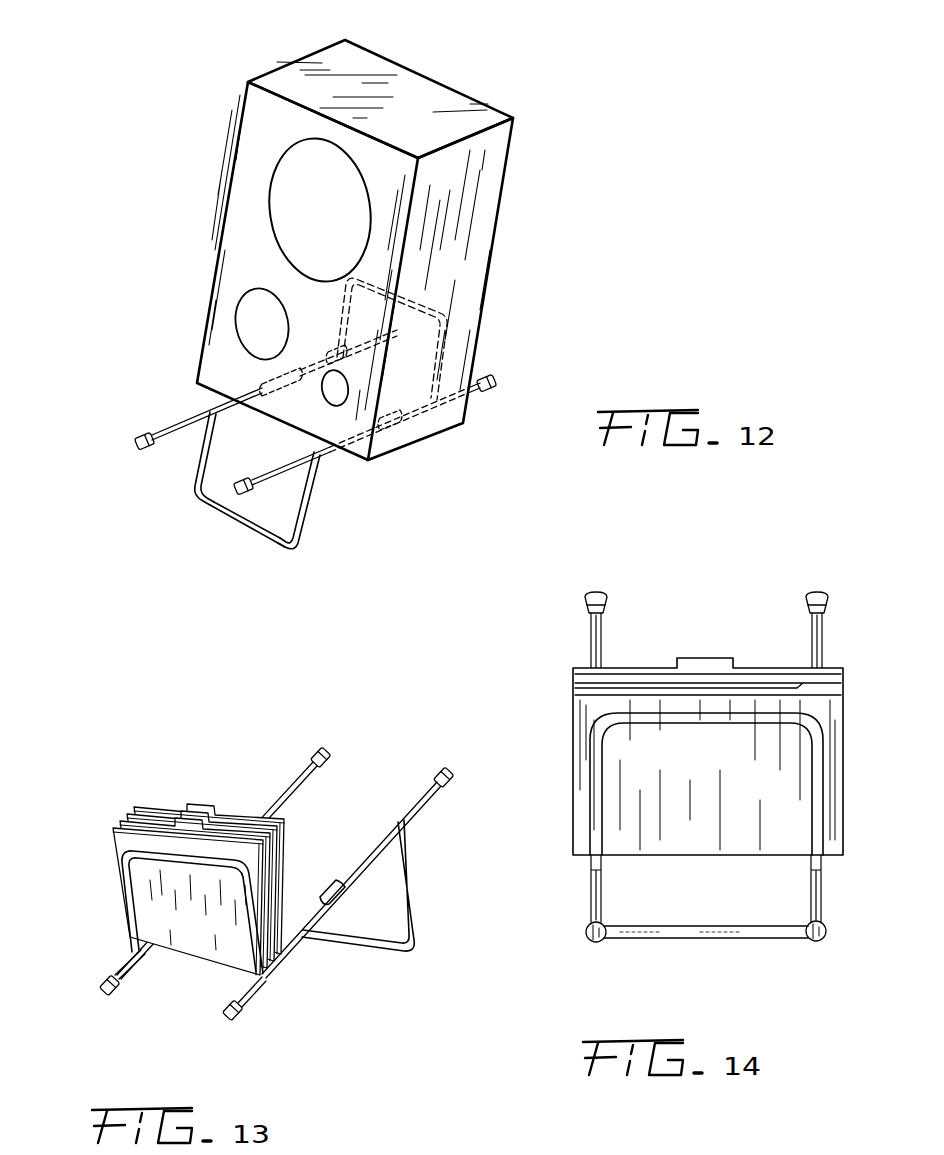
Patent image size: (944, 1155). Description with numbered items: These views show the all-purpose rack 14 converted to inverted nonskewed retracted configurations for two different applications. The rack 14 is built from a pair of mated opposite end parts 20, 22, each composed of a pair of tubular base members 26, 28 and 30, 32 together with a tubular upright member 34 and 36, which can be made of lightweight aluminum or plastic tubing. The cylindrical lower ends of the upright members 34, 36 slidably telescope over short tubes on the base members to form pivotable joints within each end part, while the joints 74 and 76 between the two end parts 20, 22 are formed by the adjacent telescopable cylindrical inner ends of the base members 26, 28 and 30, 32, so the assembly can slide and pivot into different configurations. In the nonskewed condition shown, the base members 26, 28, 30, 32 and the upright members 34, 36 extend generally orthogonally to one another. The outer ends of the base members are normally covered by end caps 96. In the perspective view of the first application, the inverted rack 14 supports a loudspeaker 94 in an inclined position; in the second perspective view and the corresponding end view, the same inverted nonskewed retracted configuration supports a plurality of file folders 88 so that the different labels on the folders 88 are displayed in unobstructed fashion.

In FIG. 12, the all-purpose rack 14 is at (328, 327).
In FIG. 13, the all-purpose rack 14 is at (269, 889).
In FIG. 12, the mated end part 20 is at (253, 511).
In FIG. 13, the mated end part 20 is at (277, 993).
In FIG. 12, the mated end part 22 is at (466, 331).
In FIG. 13, the mated end part 22 is at (398, 914).
In FIG. 12, the tubular base member 26 is at (180, 417).
In FIG. 13, the tubular base member 26 is at (243, 997).
In FIG. 14, the tubular base member 26 is at (816, 895).
In FIG. 12, the tubular base member 28 is at (280, 471).
In FIG. 13, the tubular base member 28 is at (127, 968).
In FIG. 14, the tubular base member 28 is at (600, 897).
In FIG. 12, the tubular base member 30 is at (335, 357).
In FIG. 13, the tubular base member 30 is at (360, 860).
In FIG. 14, the tubular base member 30 is at (820, 645).
In FIG. 12, the tubular base member 32 is at (473, 397).
In FIG. 13, the tubular base member 32 is at (297, 783).
In FIG. 14, the tubular base member 32 is at (590, 640).
In FIG. 12, the tubular upright member 34 is at (275, 540).
In FIG. 13, the tubular upright member 34 is at (125, 866).
In FIG. 14, the tubular upright member 34 is at (657, 720).
In FIG. 12, the tubular upright member 36 is at (455, 337).
In FIG. 13, the tubular upright member 36 is at (358, 950).
In FIG. 14, the tubular upright member 36 is at (694, 938).
In FIG. 12, the joint 74 is at (260, 377).
In FIG. 12, the joint 76 is at (385, 442).
In FIG. 13, the file folders 88 is at (113, 830).
In FIG. 14, the file folders 88 is at (573, 697).
In FIG. 12, the loudspeaker 94 is at (482, 183).
In FIG. 12, the end caps 96 is at (395, 340).
In FIG. 13, the end caps 96 is at (107, 997).
In FIG. 14, the end caps 96 is at (597, 592).